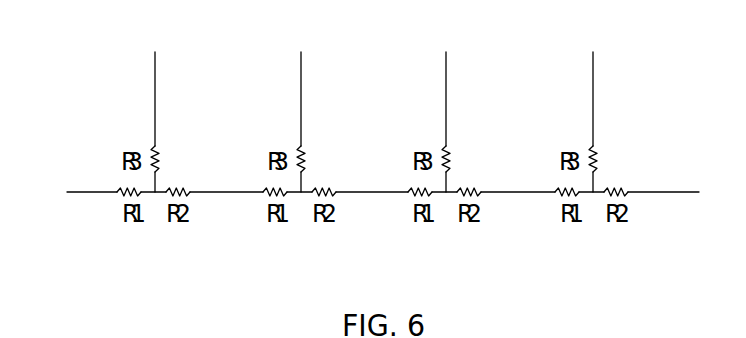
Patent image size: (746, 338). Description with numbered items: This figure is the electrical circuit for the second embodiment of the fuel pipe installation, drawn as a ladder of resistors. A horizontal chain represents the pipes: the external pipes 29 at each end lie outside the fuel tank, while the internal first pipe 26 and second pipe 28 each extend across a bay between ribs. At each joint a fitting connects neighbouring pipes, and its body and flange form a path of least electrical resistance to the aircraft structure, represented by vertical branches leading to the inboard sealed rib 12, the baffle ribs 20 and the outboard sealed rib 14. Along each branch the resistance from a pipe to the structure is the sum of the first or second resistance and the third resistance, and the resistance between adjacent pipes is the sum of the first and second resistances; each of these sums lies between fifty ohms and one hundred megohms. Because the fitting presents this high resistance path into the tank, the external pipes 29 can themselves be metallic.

The inboard sealed rib 12 is at (155, 73).
The outboard sealed rib 14 is at (593, 73).
The baffle rib 20 is at (472, 46).
The first pipe 26 is at (241, 192).
The second pipe 28 is at (385, 192).
The external pipe 29 is at (695, 220).